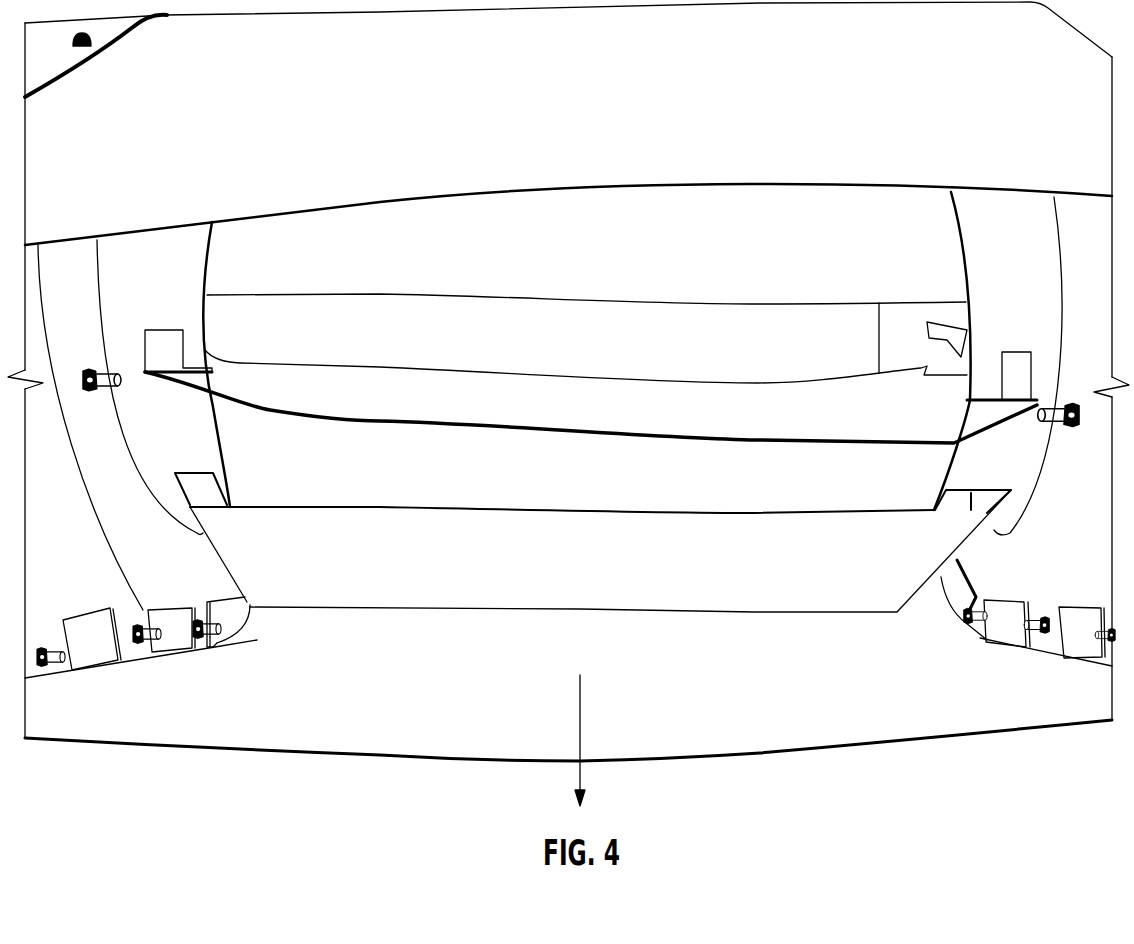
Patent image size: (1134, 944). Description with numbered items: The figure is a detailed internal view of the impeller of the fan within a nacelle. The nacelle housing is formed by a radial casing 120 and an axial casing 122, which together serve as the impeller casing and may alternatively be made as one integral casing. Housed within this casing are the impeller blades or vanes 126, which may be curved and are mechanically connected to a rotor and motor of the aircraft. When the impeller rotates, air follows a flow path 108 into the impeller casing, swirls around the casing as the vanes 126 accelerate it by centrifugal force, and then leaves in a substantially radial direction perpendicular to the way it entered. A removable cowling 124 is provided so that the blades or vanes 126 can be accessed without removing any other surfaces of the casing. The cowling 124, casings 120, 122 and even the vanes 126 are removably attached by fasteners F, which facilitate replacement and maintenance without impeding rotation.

The flow path 108 is at (581, 705).
The radial casing 120 is at (638, 119).
The axial casing 122 is at (102, 599).
The cowling 124 is at (194, 587).
The blades or vanes 126 is at (660, 256).
The fasteners F is at (218, 632).